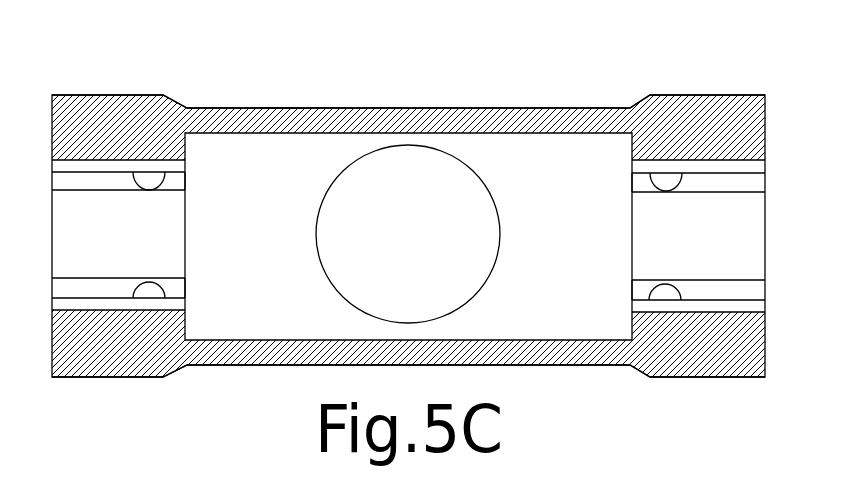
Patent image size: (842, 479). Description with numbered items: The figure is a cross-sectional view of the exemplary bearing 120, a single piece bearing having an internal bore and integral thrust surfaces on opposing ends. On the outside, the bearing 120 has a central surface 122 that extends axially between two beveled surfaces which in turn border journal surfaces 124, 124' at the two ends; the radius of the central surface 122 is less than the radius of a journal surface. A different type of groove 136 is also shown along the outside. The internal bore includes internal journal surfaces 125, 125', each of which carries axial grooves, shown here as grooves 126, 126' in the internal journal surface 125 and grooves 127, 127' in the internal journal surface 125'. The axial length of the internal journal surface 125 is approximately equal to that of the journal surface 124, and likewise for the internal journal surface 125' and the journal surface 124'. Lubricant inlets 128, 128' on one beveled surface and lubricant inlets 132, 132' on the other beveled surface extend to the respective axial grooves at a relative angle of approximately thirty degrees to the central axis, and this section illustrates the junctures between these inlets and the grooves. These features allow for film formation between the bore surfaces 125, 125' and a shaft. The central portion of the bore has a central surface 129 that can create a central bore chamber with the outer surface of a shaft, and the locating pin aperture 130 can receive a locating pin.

The bearing 120 is at (220, 70).
The central surface 122 is at (572, 108).
The journal surface 124 is at (694, 215).
The journal surface 124' is at (119, 214).
The internal journal surface 125 is at (118, 235).
The internal journal surface 125' is at (698, 236).
The axial groove 126 is at (222, 296).
The axial groove 126' is at (225, 176).
The axial groove 127 is at (592, 295).
The axial groove 127' is at (591, 178).
The lubricant inlet 128 is at (121, 277).
The lubricant inlet 128' is at (119, 193).
The central surface 129 is at (285, 244).
The locating pin aperture 130 is at (500, 236).
The lubricant inlet 132 is at (697, 277).
The lubricant inlet 132' is at (698, 195).
The groove 136 is at (278, 108).